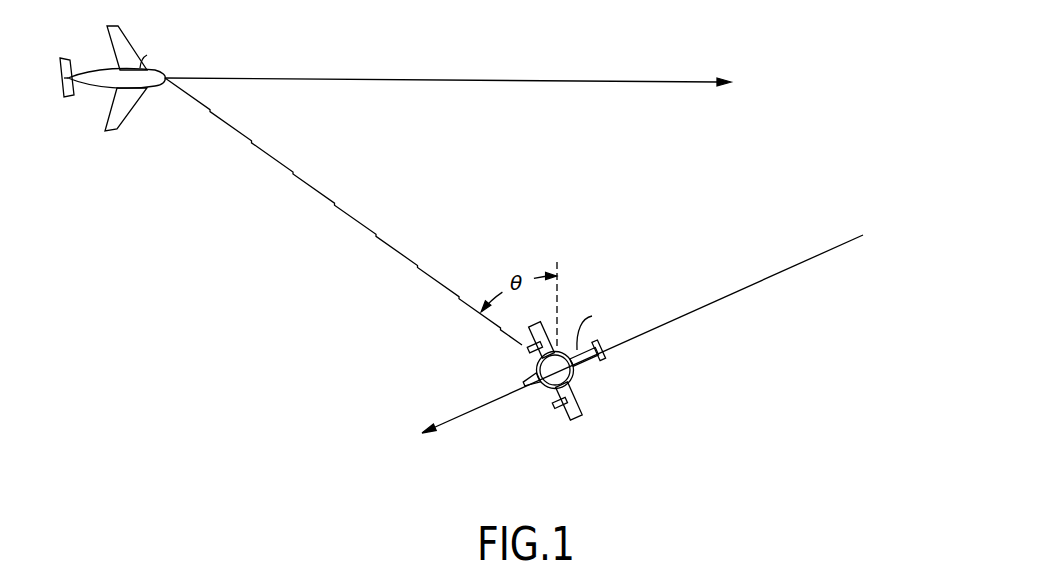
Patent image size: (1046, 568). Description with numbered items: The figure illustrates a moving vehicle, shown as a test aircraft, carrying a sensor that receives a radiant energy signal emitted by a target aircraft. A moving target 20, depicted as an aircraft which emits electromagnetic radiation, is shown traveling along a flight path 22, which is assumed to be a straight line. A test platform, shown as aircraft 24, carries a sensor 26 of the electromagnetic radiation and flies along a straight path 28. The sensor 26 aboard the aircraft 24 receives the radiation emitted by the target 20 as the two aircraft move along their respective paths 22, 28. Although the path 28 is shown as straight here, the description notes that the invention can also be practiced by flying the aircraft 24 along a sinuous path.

The moving target 20 is at (157, 90).
The flight path 22 is at (335, 80).
The test platform aircraft 24 is at (594, 380).
The sensor 26 is at (550, 367).
The straight path 28 is at (765, 279).